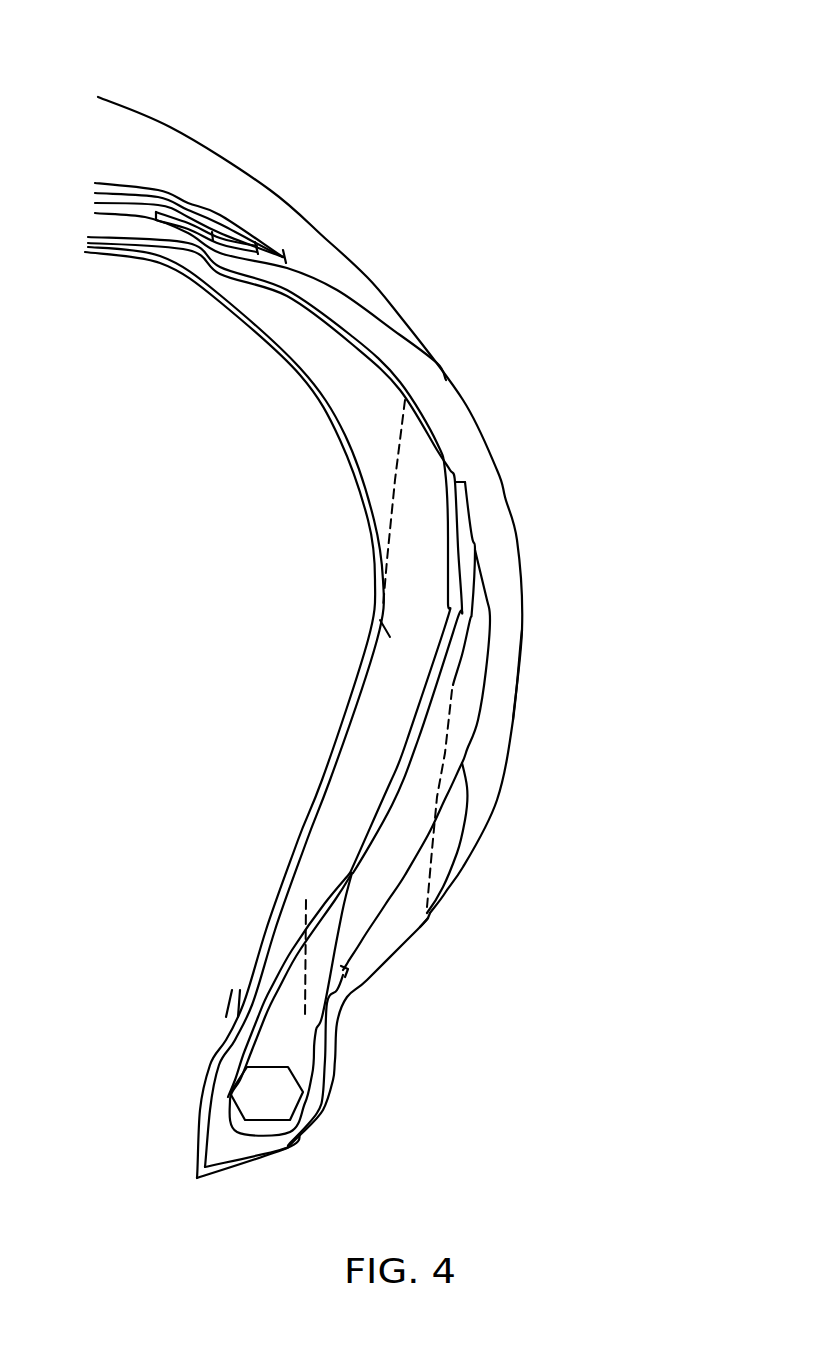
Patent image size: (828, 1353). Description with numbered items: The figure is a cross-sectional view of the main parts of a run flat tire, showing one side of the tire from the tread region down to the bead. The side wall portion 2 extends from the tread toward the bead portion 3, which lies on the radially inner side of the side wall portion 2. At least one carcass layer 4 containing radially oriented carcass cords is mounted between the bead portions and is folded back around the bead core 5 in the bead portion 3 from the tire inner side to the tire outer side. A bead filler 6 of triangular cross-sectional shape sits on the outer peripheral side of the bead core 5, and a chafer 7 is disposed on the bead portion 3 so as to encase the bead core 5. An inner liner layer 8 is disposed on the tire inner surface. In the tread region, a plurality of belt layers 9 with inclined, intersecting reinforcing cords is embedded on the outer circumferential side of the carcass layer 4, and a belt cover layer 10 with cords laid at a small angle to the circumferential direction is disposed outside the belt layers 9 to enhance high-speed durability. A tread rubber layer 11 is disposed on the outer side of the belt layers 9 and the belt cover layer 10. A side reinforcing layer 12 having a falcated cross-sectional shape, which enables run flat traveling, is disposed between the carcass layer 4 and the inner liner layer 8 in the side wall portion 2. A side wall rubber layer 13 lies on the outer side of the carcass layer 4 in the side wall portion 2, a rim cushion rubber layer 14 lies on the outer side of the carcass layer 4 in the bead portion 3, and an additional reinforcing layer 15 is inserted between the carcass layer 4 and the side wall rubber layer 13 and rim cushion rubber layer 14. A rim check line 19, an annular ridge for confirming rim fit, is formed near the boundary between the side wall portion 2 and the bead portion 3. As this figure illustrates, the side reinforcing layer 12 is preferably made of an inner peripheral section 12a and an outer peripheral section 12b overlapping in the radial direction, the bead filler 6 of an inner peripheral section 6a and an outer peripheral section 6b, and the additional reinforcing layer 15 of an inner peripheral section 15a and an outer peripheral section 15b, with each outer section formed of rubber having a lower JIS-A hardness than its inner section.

The side wall portion 2 is at (464, 399).
The bead portion 3 is at (336, 1073).
The carcass layer 4 is at (437, 692).
The bead core 5 is at (247, 1093).
The bead filler 6 is at (131, 860).
The inner peripheral section 6a is at (288, 987).
The outer peripheral section 6b is at (323, 922).
The chafer 7 is at (203, 1157).
The inner liner layer 8 is at (390, 525).
The belt layer 9 is at (140, 227).
The belt cover layer 10 is at (94, 215).
The tread rubber layer 11 is at (172, 153).
The side reinforcing layer 12 is at (206, 540).
The inner peripheral section 12a is at (390, 635).
The outer peripheral section 12b is at (381, 519).
The side wall rubber layer 13 is at (473, 463).
The rim cushion rubber layer 14 is at (383, 945).
The additional reinforcing layer 15 is at (644, 733).
The inner peripheral section 15a is at (407, 828).
The outer peripheral section 15b is at (453, 737).
The rim check line 19 is at (427, 920).